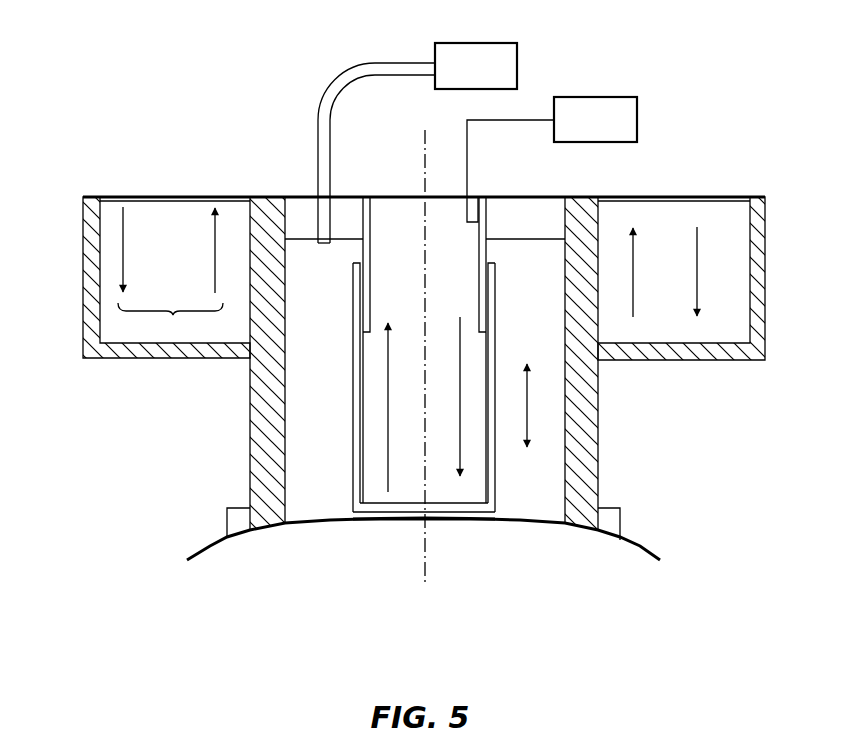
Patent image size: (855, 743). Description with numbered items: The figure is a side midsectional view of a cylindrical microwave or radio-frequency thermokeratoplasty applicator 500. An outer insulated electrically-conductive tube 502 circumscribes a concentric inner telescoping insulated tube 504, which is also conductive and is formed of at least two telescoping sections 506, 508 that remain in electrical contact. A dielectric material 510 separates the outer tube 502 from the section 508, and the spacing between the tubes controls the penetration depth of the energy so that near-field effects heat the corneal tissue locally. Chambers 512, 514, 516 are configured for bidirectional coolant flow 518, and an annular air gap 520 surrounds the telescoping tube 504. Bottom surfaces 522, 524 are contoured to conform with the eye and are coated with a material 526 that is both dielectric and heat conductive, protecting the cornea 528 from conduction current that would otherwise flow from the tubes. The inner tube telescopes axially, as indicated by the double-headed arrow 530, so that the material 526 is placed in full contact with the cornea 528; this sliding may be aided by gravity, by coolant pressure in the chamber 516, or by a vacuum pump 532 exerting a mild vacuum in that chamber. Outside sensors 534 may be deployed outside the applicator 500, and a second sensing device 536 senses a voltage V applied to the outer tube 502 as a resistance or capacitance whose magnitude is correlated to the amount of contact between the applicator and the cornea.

The thermokeratoplasty applicator 500 is at (111, 72).
The outer insulated electrically-conductive tube 502 is at (250, 428).
The inner telescoping insulated tube 504 is at (349, 417).
The telescoping section 506 is at (495, 320).
The telescoping section 508 is at (490, 252).
The dielectric material 510 is at (512, 207).
The chamber 512 is at (152, 207).
The chamber 514 is at (685, 207).
The chamber 516 is at (402, 200).
The coolant flow 518 is at (170, 322).
The annular air gap 520 is at (533, 496).
The bottom surface 522 is at (270, 530).
The bottom surface 524 is at (390, 522).
The dielectric heat-conductive coating material 526 is at (440, 523).
The cornea 528 is at (619, 562).
The double-headed arrow 530 is at (530, 397).
The vacuum pump 532 is at (518, 50).
The outside sensor 534 is at (612, 512).
The second sensing device 536 is at (638, 103).
The voltage V is at (250, 388).